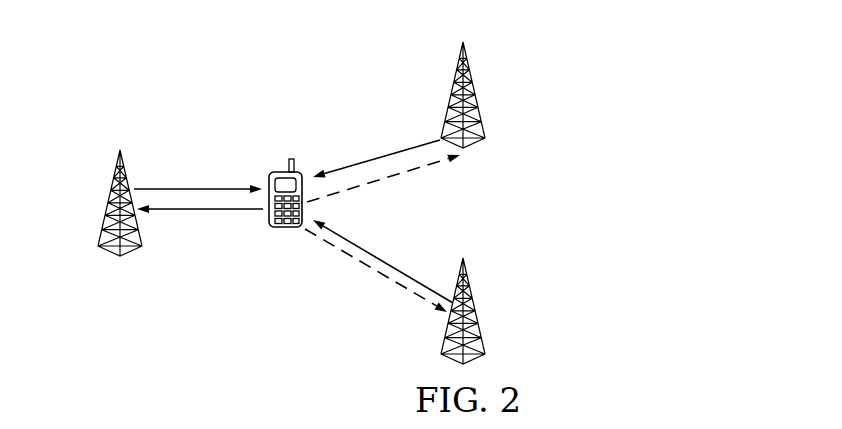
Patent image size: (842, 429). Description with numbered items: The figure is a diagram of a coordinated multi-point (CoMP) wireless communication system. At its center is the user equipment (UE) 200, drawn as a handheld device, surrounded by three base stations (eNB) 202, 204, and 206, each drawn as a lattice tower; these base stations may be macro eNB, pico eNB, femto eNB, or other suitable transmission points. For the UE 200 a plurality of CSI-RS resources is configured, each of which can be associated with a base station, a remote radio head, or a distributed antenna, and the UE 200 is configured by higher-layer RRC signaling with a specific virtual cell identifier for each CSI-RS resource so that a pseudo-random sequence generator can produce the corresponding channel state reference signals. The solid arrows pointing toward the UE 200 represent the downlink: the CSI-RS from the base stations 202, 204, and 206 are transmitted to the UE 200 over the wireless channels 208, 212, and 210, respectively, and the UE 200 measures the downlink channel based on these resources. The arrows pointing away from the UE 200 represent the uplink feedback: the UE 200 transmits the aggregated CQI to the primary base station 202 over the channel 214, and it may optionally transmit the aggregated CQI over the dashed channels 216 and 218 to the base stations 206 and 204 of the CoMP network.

The user equipment 200 is at (284, 172).
The base station 202 is at (103, 232).
The base station 204 is at (484, 306).
The base station 206 is at (481, 92).
The wireless channel 208 is at (197, 186).
The wireless channel 210 is at (376, 155).
The wireless channel 212 is at (391, 258).
The channel 214 is at (197, 212).
The channel 216 is at (421, 166).
The channel 218 is at (370, 277).